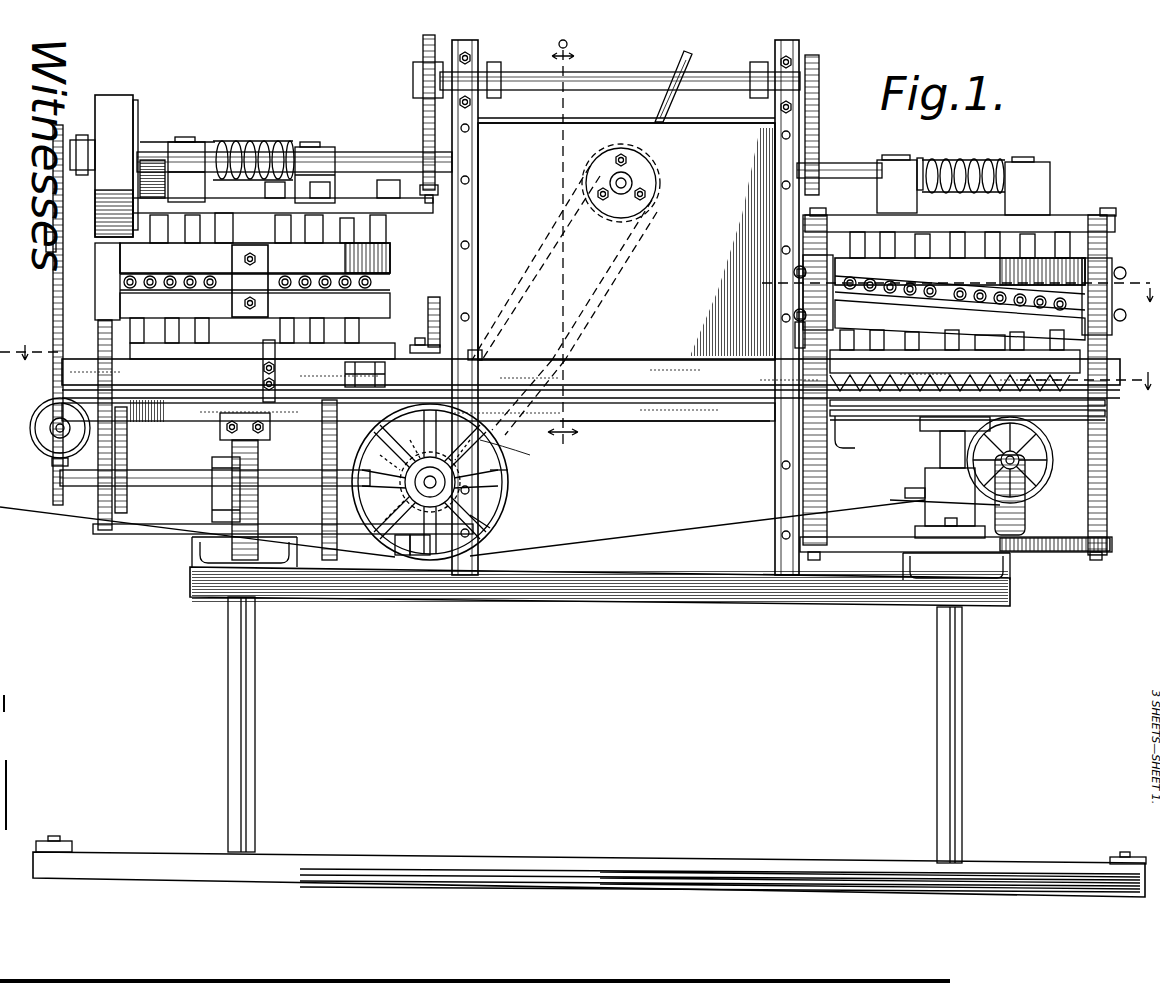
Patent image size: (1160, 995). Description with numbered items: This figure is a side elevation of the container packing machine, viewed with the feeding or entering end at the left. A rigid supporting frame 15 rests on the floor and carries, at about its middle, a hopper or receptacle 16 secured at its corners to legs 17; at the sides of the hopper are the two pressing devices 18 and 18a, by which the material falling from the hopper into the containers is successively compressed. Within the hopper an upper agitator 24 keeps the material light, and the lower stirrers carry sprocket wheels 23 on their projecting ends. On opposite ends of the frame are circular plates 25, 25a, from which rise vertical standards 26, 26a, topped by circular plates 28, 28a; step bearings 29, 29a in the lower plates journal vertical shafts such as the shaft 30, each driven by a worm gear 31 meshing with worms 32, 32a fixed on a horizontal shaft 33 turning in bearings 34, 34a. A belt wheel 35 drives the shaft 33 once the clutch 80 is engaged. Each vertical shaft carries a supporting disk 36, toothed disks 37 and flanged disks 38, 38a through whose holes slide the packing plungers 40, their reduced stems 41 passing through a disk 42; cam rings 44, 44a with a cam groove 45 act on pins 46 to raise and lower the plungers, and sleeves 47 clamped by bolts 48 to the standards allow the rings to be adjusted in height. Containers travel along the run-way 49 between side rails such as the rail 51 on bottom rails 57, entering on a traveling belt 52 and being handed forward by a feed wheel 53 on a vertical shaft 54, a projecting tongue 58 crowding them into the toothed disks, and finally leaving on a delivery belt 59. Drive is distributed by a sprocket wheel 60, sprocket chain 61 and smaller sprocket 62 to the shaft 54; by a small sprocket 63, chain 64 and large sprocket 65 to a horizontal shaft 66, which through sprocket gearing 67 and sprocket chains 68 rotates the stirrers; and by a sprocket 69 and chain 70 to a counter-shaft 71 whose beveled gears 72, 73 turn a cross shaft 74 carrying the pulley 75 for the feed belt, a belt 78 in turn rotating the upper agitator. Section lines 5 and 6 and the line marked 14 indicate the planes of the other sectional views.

The section line 5— 5 is at (954, 289).
The section line 6— 6 is at (562, 253).
The section line 4-4 14 is at (575, 367).
The supporting frame 15 is at (589, 747).
The hopper 16 is at (626, 241).
The legs 17 is at (478, 148).
The pressing device 18 is at (974, 208).
The pressing device 18a is at (268, 168).
The sprocket wheels 23 is at (434, 300).
The agitator 24 is at (660, 110).
The circular plate 25 is at (1030, 552).
The circular plate 25a is at (148, 533).
The vertical standards 26 is at (1110, 500).
The vertical standards 26a is at (100, 490).
The circular plate 28 is at (1065, 225).
The circular plate 28a is at (160, 198).
The step bearing 29 is at (928, 478).
The step bearing 29a is at (215, 460).
The vertical shaft 30 is at (940, 450).
The worm gear 31 is at (918, 162).
The worm 32 is at (968, 160).
The worm 32a is at (258, 136).
The horizontal shaft 33 is at (842, 160).
The bearing 34 is at (352, 145).
The bearing 34a is at (200, 142).
The belt wheel 35 is at (116, 166).
The supporting disk 36 is at (868, 408).
The toothed disk 37 is at (1060, 415).
The flanged disk 38 is at (955, 360).
The flanged disk 38a is at (262, 339).
The packing plunger 40 is at (1000, 348).
The reduced stem 41 is at (960, 330).
The disk 42 is at (392, 258).
The cam ring 44 is at (960, 271).
The cam ring 44a is at (255, 258).
The cam groove 45 is at (602, 286).
The pins 46 is at (175, 288).
The sleeves 47 is at (95, 254).
The bolts 48 is at (330, 258).
The run-way 49 is at (591, 417).
The side rail 51 is at (591, 372).
The traveling belt 52 is at (508, 495).
The feed wheel 53 is at (345, 374).
The vertical shaft 54 is at (478, 358).
The bottom rails 57 is at (676, 421).
The projecting tongue 58 is at (848, 438).
The delivery belt 59 is at (675, 536).
The sprocket wheel 60 is at (268, 432).
The sprocket chain 61 is at (342, 480).
The sprocket wheel 62 is at (495, 440).
The sprocket wheel 63 is at (428, 195).
The chain 64 is at (423, 130).
The sprocket wheel 65 is at (420, 62).
The horizontal shaft 66 is at (648, 80).
The sprocket gearing 67 is at (827, 125).
The sprocket chains 68 is at (564, 300).
The sprocket wheel 69 is at (58, 125).
The sprocket chain 70 is at (52, 240).
The counter-shaft 71 is at (162, 472).
The beveled gear wheel 72 is at (397, 538).
The beveled gear 73 is at (418, 548).
The cross shaft 74 is at (499, 527).
The pulley 75 is at (517, 472).
The belt 78 is at (575, 434).
The clutch 80 is at (82, 138).